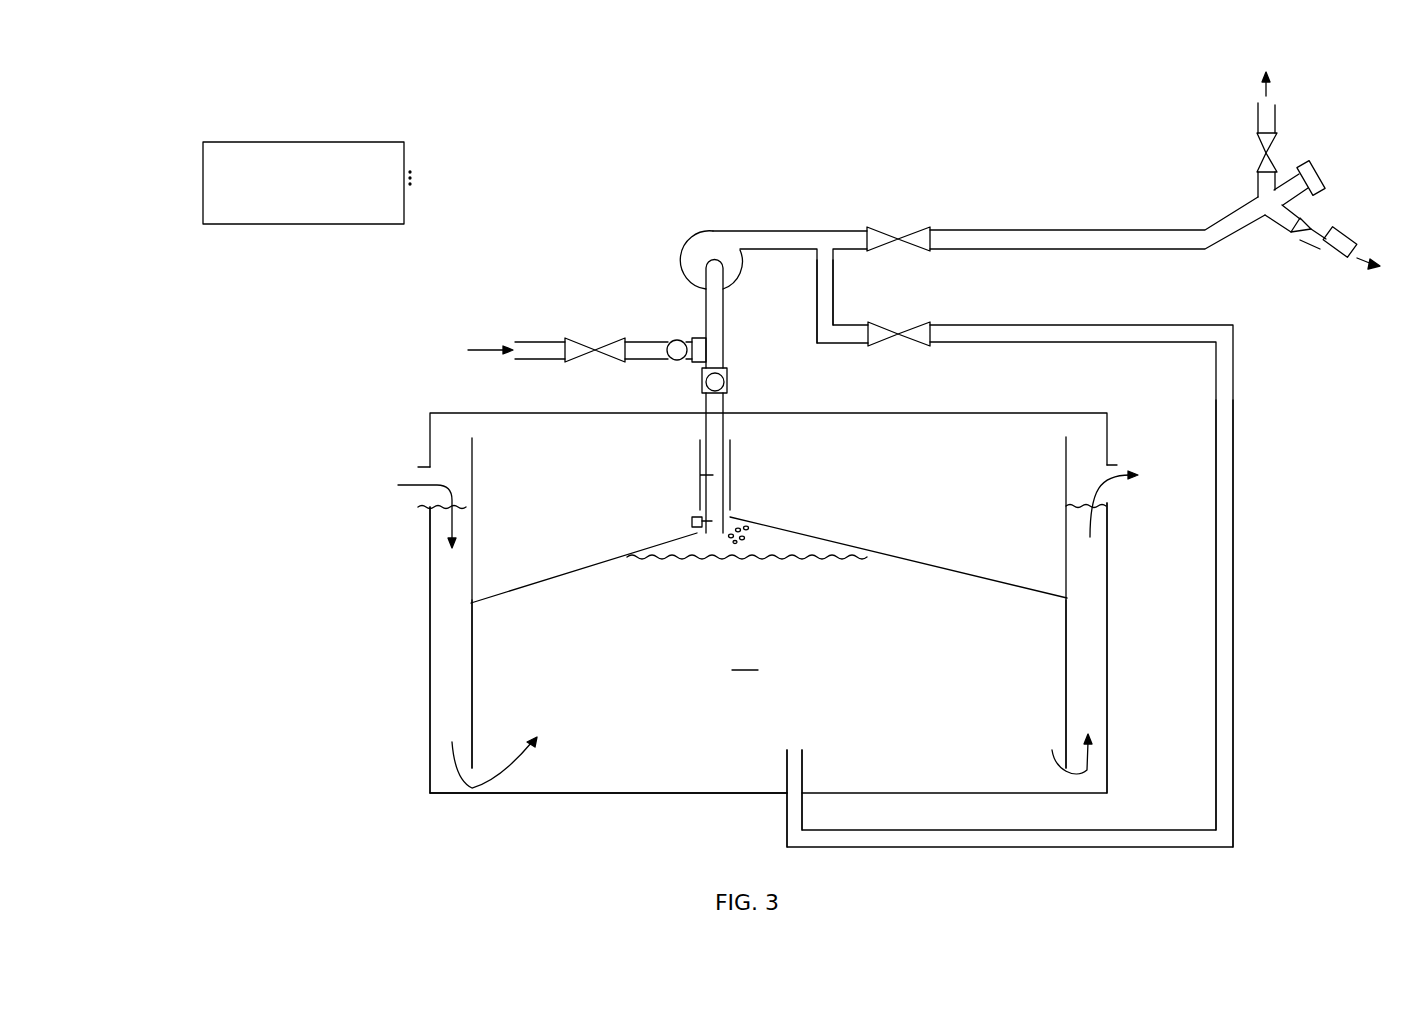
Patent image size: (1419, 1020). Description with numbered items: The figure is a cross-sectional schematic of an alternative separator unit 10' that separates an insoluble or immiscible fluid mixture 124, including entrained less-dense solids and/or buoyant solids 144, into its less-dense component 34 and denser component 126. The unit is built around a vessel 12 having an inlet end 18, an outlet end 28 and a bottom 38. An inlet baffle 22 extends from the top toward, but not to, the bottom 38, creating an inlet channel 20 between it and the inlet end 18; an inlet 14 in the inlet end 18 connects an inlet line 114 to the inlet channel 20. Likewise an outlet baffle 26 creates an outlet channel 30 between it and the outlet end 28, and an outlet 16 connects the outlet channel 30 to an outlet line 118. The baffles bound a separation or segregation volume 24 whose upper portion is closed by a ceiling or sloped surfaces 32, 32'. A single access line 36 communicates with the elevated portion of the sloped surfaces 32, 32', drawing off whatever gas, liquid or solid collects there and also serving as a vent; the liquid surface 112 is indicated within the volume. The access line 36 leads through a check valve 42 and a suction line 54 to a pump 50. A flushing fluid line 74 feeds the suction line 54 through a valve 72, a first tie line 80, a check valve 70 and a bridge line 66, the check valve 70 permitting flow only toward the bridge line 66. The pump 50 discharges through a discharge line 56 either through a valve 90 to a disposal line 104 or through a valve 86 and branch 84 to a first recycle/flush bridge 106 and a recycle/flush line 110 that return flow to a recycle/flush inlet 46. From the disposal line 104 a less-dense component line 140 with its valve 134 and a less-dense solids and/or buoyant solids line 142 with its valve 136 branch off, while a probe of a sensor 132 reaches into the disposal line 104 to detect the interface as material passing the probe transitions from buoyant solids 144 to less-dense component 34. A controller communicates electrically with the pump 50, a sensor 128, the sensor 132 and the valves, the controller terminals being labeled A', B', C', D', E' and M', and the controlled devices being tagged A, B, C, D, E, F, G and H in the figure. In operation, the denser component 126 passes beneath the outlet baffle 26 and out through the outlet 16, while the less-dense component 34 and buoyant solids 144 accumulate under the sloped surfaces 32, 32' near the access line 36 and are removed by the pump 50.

The alternative separator unit 10' is at (251, 840).
The vessel 12 is at (430, 747).
The inlet 14 is at (423, 510).
The outlet 16 is at (1117, 507).
The inlet end 18 is at (428, 643).
The inlet channel 20 is at (447, 572).
The inlet baffle 22 is at (472, 688).
The separation or segregation volume 24 is at (745, 657).
The outlet baffle 26 is at (1075, 712).
The outlet end 28 is at (1108, 668).
The outlet channel 30 is at (1093, 593).
The ceiling or sloped surface 32 is at (584, 564).
The ceiling or sloped surface 32' is at (898, 557).
The less-dense component 34 is at (1270, 92).
The access line 36 is at (713, 475).
The bottom 38 is at (553, 795).
The check valve 42 is at (727, 385).
The recycle/flush inlet 46 is at (787, 802).
The pump 50 is at (697, 246).
The suction line 54 is at (717, 298).
The discharge line 56 is at (755, 237).
The bridge line 66 is at (703, 349).
The check valve 70 is at (684, 364).
The valve 72 is at (572, 360).
The flushing fluid line 74 is at (537, 347).
The first tie line 80 is at (656, 352).
The branch pipe 84 is at (828, 313).
The valve 86 is at (922, 324).
The valve 90 is at (868, 230).
The disposal line 104 is at (1100, 237).
The first recycle/flush bridge 106 is at (1130, 325).
The recycle/flush line 110 is at (1222, 410).
The liquid surface 112 is at (710, 563).
The inlet line 114 is at (418, 467).
The outlet line 118 is at (1112, 463).
The insoluble or immiscible fluid mixture 124 is at (412, 488).
The denser component 126 is at (1112, 478).
The sensor 128 is at (697, 520).
The sensor 132 is at (1308, 165).
The valve 134 is at (1270, 145).
The valve 136 is at (1315, 230).
The less-dense component line 140 is at (1260, 106).
The less-dense solids and/or buoyant solids line 142 is at (1365, 265).
The less-dense solids and/or buoyant solids 144 is at (770, 530).
The nozzle A is at (672, 527).
The sensor B is at (662, 267).
The valve C is at (599, 377).
The valve D is at (905, 266).
The valve E is at (905, 366).
The sensor F is at (1310, 242).
The valve G is at (1264, 153).
The sensor H is at (1328, 171).
The controller terminal A' is at (247, 248).
The controller terminal B' is at (307, 248).
The controller terminal C' is at (360, 248).
The controller terminal D' is at (413, 248).
The controller terminal E' is at (430, 206).
The controller M' is at (331, 181).